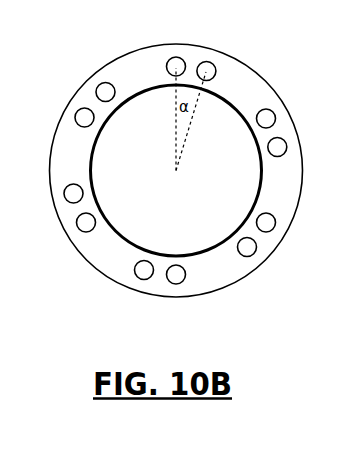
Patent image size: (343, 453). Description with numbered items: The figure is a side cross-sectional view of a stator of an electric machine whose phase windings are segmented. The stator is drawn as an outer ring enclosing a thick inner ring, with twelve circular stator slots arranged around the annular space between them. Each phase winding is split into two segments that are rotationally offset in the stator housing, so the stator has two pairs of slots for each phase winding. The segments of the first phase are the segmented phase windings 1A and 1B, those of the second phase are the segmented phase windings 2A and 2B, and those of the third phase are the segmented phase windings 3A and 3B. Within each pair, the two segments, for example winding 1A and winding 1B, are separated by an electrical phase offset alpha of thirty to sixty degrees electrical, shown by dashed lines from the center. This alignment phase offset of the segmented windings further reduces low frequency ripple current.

The segmented phase winding 1A is at (173, 57).
The segmented phase winding 1B is at (216, 66).
The segmented phase winding 2A is at (273, 111).
The segmented phase winding 2B is at (286, 142).
The segmented phase winding 3A is at (275, 228).
The segmented phase winding 3B is at (254, 256).